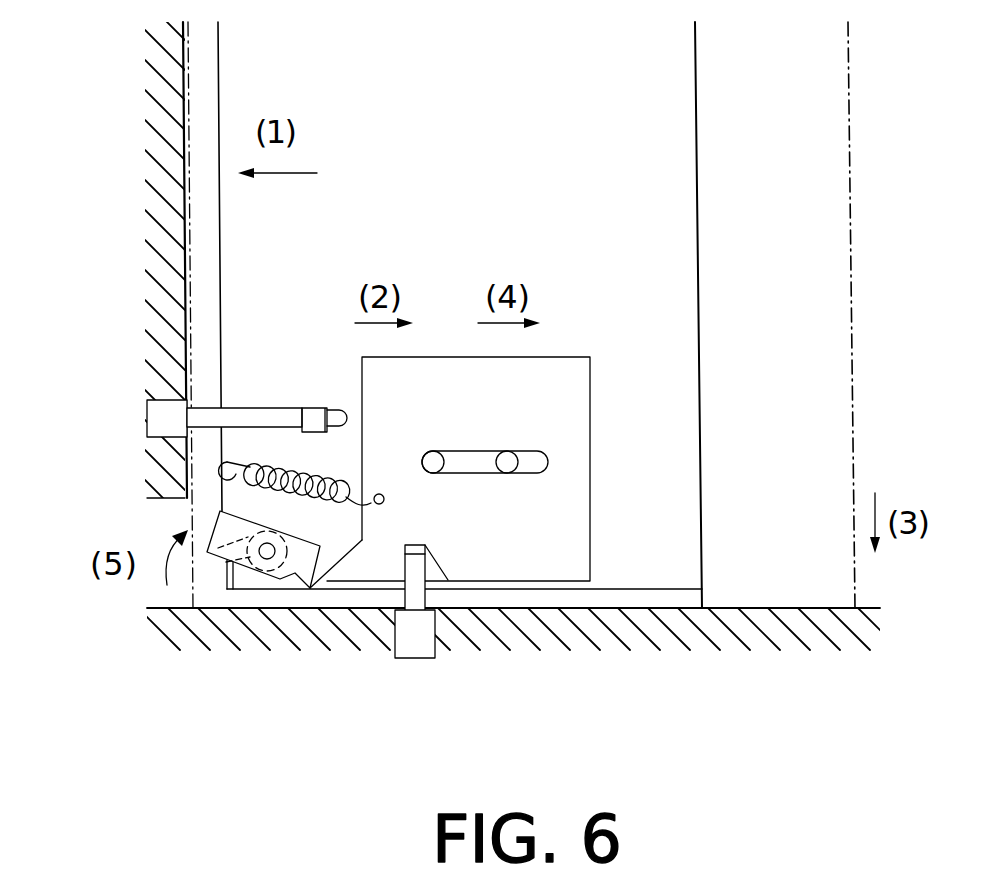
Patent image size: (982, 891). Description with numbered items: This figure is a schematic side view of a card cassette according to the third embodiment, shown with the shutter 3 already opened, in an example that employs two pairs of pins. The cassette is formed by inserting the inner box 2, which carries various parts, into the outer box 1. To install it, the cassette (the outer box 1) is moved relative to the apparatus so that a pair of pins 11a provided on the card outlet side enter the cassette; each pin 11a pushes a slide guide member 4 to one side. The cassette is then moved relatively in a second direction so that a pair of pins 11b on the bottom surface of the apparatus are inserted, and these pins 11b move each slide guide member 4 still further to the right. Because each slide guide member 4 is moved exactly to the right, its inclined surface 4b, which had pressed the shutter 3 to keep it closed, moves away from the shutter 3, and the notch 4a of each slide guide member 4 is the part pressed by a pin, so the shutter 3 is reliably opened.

The outer box 1 is at (853, 391).
The inner box 2 is at (698, 260).
The shutter 3 is at (228, 562).
The slide guide member 4 is at (545, 560).
The notch 4a is at (430, 568).
The inclined surface 4b is at (348, 560).
The pin 11a is at (160, 417).
The pin 11b is at (415, 650).